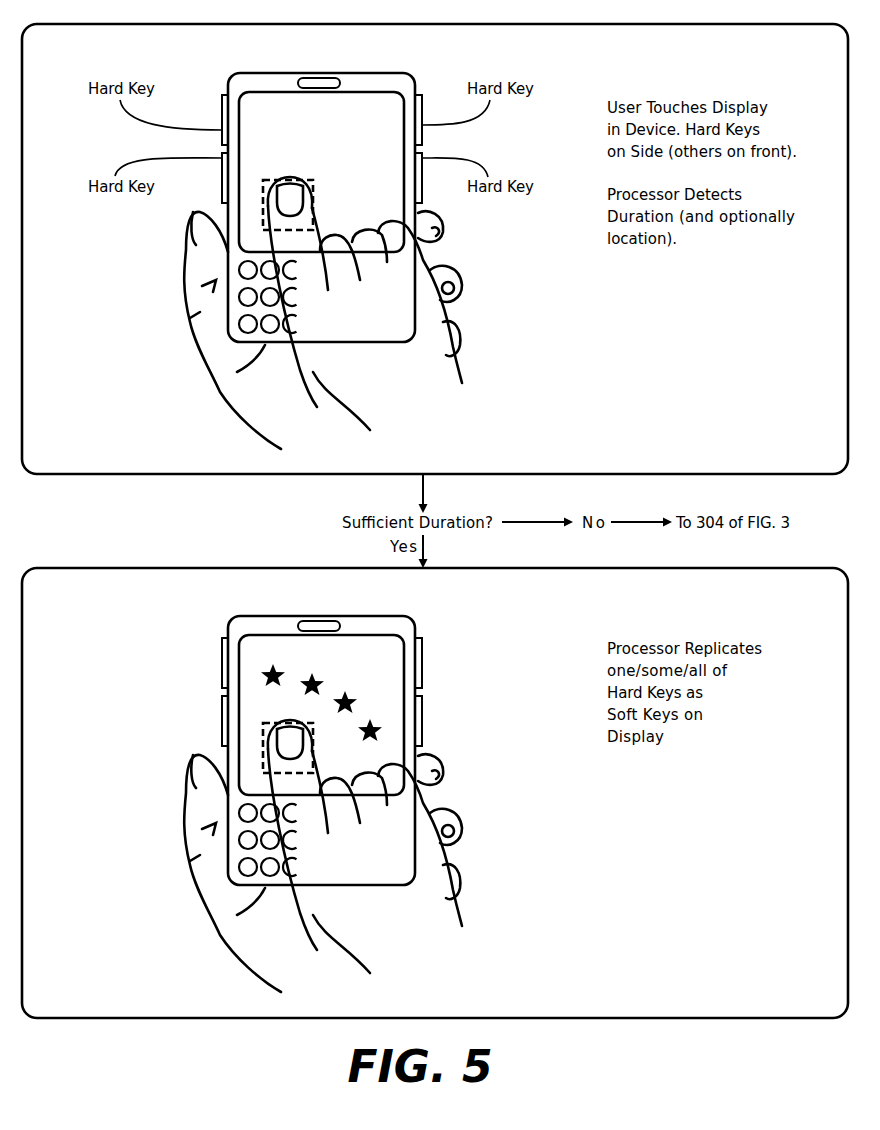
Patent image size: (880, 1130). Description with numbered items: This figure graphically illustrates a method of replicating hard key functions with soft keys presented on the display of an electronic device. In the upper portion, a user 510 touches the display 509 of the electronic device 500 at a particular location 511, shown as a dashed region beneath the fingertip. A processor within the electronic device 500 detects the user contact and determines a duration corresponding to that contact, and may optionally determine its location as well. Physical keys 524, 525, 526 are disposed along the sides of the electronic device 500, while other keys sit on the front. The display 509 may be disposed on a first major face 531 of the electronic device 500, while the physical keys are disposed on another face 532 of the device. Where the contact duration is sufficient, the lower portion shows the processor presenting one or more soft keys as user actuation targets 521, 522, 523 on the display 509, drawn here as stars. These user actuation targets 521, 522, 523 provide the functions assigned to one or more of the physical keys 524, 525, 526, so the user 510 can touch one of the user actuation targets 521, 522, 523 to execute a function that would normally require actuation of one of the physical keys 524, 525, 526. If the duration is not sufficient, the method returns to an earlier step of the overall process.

The electronic device 500 is at (272, 73).
The display 509 is at (349, 91).
The user 510 is at (307, 228).
The particular location 511 is at (267, 181).
The user actuation target 521 is at (268, 666).
The user actuation target 522 is at (307, 678).
The user actuation target 523 is at (333, 699).
The physical key 524 is at (220, 672).
The physical key 525 is at (220, 703).
The physical key 526 is at (422, 670).
The first major face 531 is at (236, 795).
The another face 532 is at (428, 750).